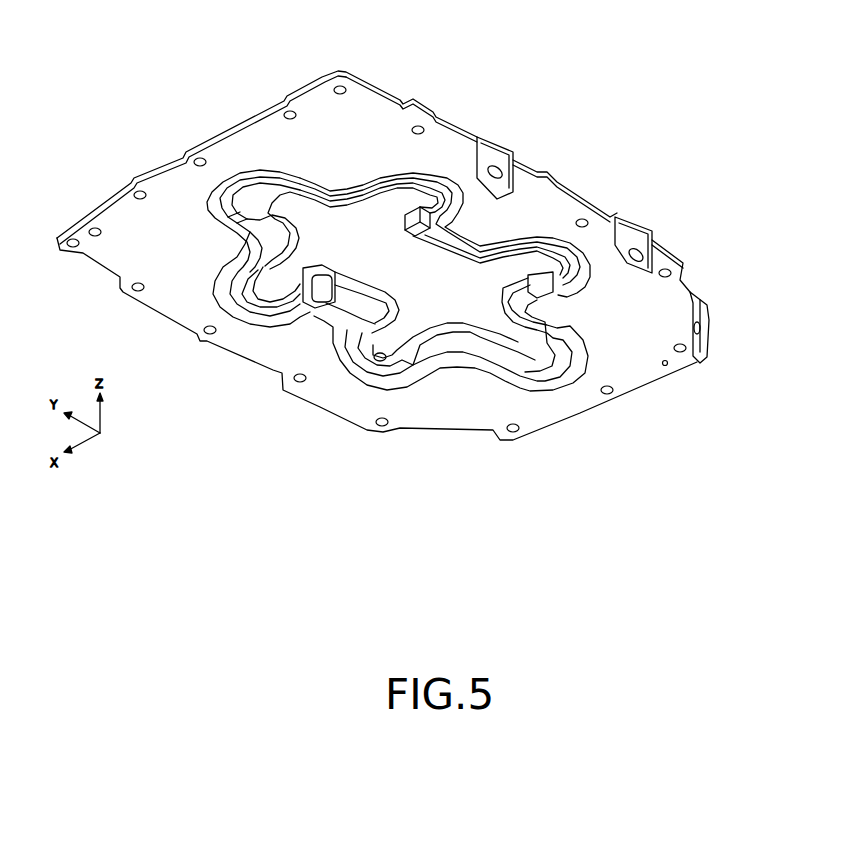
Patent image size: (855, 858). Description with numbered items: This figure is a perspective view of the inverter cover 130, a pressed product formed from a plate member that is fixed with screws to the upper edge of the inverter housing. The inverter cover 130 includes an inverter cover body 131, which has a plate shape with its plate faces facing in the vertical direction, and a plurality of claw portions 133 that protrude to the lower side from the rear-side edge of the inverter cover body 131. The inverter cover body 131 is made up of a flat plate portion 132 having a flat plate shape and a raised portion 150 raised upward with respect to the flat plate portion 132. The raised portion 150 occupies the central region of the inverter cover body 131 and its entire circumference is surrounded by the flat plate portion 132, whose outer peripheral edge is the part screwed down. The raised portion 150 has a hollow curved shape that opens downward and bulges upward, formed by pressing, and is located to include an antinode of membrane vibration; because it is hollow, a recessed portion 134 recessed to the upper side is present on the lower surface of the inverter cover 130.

The inverter cover 130 is at (607, 104).
The inverter cover body 131 is at (290, 97).
The flat plate portion 132 is at (370, 110).
The claw portions 133 is at (500, 157).
The recessed portion 134 is at (392, 362).
The raised portion 150 is at (469, 370).